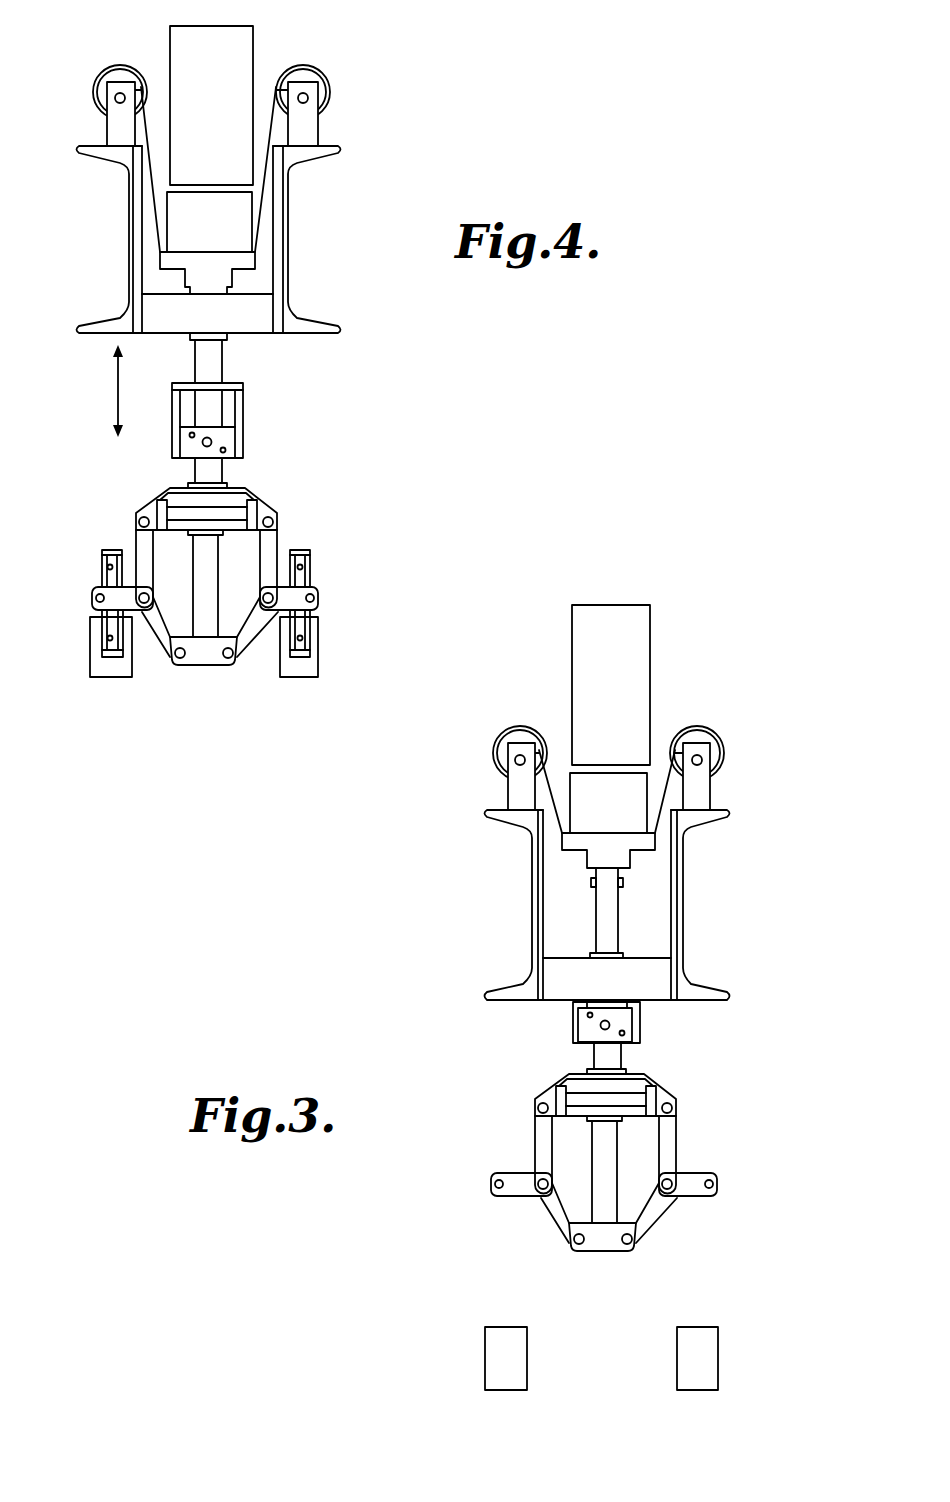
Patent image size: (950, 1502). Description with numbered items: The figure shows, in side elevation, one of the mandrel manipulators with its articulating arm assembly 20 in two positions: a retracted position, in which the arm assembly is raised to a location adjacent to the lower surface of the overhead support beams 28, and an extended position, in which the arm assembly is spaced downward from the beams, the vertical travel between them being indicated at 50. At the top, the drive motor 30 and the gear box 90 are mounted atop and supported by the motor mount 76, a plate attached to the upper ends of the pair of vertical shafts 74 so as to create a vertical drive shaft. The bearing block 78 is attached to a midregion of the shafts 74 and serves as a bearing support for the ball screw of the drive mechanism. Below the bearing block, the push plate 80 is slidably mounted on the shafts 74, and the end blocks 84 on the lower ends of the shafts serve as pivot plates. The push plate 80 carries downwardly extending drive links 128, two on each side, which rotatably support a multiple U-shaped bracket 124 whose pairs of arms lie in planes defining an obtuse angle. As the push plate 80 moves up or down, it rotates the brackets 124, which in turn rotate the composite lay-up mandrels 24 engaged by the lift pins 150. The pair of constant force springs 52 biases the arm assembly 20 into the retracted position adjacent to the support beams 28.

In FIG. 4, the articulating arm assembly 20 is at (252, 438).
In FIG. 3, the articulating arm assembly 20 is at (527, 1079).
In FIG. 4, the composite lay-up mandrel 24 is at (73, 667).
In FIG. 3, the composite lay-up mandrel 24 is at (490, 1347).
In FIG. 4, the overhead support beam 28 is at (307, 318).
In FIG. 3, the overhead support beam 28 is at (702, 983).
In FIG. 4, the drive motor 30 is at (252, 48).
In FIG. 3, the drive motor 30 is at (635, 647).
In FIG. 4, the vertical travel 50 is at (95, 391).
In FIG. 4, the constant force spring 52 is at (100, 74).
In FIG. 3, the constant force spring 52 is at (703, 732).
In FIG. 3, the vertical shaft 74 is at (597, 900).
In FIG. 4, the motor mount 76 is at (255, 262).
In FIG. 3, the motor mount 76 is at (648, 850).
In FIG. 4, the bearing block 78 is at (178, 443).
In FIG. 3, the bearing block 78 is at (560, 1027).
In FIG. 4, the push plate 80 is at (267, 498).
In FIG. 3, the push plate 80 is at (658, 1123).
In FIG. 4, the end block 84 is at (205, 657).
In FIG. 3, the end block 84 is at (554, 1260).
In FIG. 4, the gear box 90 is at (240, 226).
In FIG. 3, the gear box 90 is at (636, 808).
In FIG. 4, the multiple U-shaped bracket 124 is at (162, 635).
In FIG. 3, the multiple U-shaped bracket 124 is at (599, 1213).
In FIG. 4, the drive link 128 is at (142, 538).
In FIG. 3, the drive link 128 is at (599, 1155).
In FIG. 4, the lift pin 150 is at (102, 568).